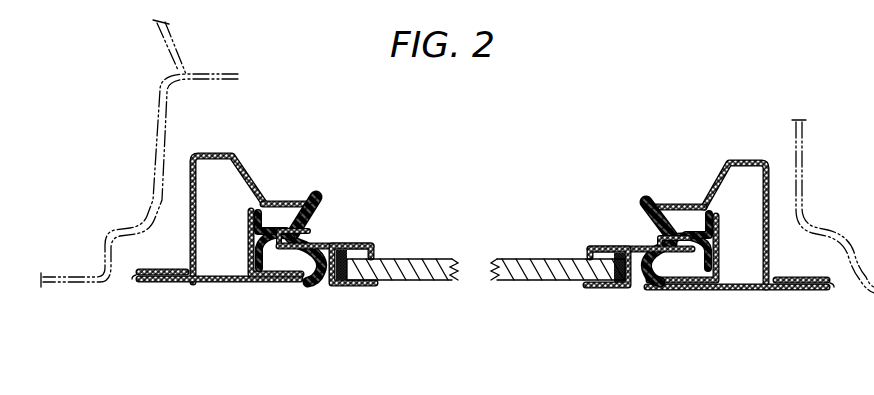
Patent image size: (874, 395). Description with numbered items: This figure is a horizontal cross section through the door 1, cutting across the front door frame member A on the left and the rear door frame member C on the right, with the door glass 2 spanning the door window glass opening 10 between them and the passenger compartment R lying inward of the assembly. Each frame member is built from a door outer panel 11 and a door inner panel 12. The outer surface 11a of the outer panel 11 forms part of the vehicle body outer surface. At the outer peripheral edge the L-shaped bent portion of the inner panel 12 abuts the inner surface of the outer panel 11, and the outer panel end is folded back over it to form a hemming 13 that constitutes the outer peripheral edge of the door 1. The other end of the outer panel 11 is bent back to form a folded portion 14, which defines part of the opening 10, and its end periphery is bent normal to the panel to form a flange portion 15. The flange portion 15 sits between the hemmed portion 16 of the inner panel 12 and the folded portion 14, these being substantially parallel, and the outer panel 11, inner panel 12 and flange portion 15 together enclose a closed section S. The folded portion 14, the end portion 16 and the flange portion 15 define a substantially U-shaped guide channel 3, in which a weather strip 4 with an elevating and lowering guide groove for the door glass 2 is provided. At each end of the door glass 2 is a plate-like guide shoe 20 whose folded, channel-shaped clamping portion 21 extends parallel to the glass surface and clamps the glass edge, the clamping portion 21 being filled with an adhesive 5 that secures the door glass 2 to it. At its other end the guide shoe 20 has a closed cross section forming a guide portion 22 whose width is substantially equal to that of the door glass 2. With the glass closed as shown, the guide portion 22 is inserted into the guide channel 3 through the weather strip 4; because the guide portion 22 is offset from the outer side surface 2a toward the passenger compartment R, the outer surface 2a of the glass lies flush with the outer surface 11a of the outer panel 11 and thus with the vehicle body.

The door 1 is at (552, 187).
The door glass 2 is at (510, 281).
The outer side surface of door glass 2a is at (428, 281).
The guide channel 3 is at (320, 217).
The weather strip 4 is at (268, 279).
The adhesive 5 is at (341, 286).
The door window glass opening 10 is at (327, 284).
The door outer panel 11 is at (222, 284).
The outer surface of outer panel 11a is at (165, 284).
The door inner panel 12 is at (244, 158).
The hemming 13 is at (133, 283).
The folded portion 14 is at (297, 284).
The flange portion 15 is at (247, 242).
The hemmed portion 16 is at (293, 199).
The guide shoe 20 is at (334, 240).
The clamping portion 21 is at (380, 247).
The guide portion 22 is at (277, 228).
The front door frame member A is at (220, 135).
The rear door frame member C is at (722, 155).
The closed section S is at (212, 199).
The passenger compartment R is at (428, 168).